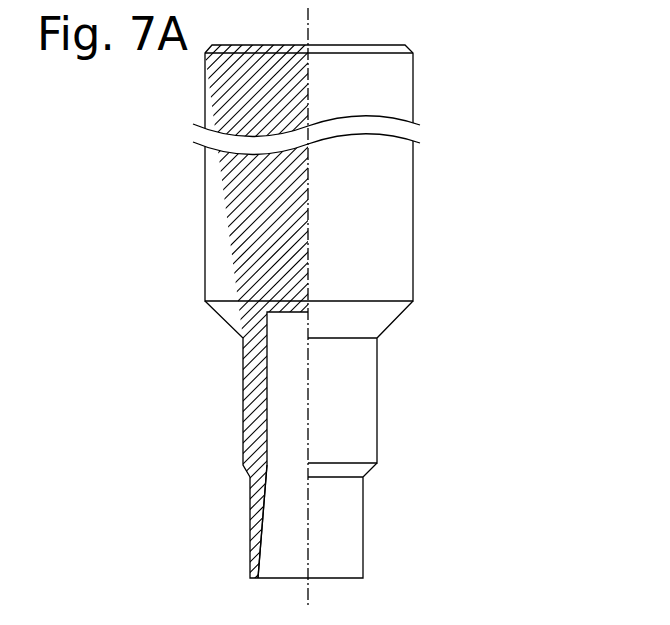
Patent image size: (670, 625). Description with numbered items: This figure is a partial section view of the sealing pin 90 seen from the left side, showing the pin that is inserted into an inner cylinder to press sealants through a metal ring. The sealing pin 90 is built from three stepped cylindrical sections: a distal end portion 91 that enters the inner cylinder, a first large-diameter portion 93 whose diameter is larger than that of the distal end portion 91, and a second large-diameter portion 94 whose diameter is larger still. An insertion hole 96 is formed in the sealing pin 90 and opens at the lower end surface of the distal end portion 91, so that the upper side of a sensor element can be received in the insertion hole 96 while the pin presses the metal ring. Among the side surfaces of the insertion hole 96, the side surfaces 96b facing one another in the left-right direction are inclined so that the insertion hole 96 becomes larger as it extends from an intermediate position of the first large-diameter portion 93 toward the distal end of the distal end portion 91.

The sealing pin 90 is at (518, 86).
The second large-diameter portion 94 is at (395, 197).
The first large-diameter portion 93 is at (360, 410).
The distal end portion 91 is at (345, 530).
The insertion hole 96 is at (291, 397).
The side surfaces 96b is at (262, 542).